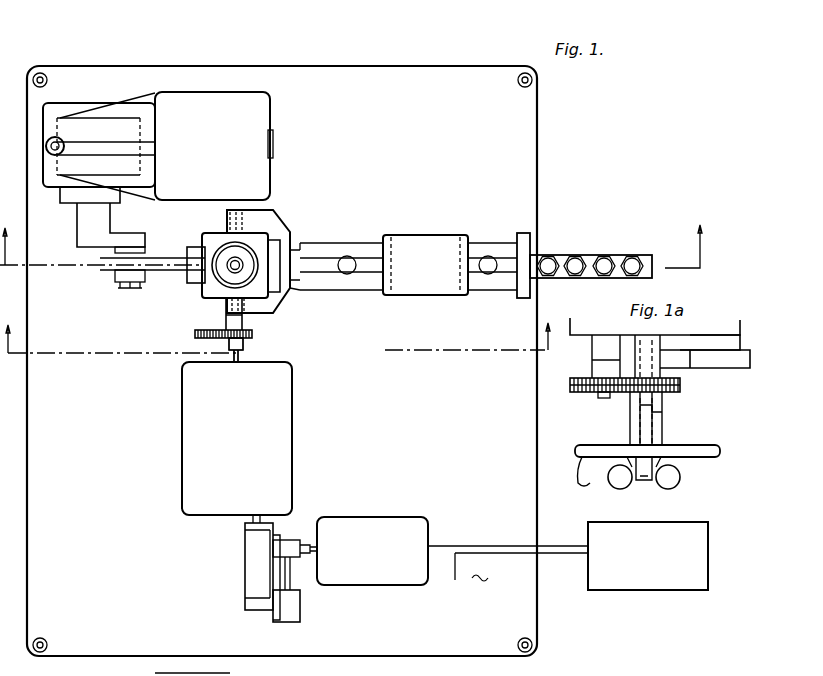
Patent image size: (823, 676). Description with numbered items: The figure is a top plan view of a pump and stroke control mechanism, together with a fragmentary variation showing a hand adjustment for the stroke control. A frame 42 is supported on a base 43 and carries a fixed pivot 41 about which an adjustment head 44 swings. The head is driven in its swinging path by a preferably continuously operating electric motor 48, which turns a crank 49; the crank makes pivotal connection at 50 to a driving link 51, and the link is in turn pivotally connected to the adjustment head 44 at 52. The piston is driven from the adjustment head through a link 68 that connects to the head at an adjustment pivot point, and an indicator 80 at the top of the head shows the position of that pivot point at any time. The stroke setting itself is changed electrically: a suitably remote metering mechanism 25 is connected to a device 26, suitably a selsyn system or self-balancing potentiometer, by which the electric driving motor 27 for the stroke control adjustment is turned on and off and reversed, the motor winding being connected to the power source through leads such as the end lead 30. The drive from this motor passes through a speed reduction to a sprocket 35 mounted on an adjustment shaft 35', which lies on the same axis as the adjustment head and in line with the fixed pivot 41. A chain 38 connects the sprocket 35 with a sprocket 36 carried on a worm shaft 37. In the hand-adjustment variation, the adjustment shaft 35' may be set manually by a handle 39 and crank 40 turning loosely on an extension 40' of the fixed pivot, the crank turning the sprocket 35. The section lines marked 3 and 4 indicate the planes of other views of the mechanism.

In FIG. 1, the section line 3 is at (281, 343).
In FIG. 1, the section line 4 is at (358, 251).
In FIG. 1, the metering mechanism 25 is at (648, 556).
In FIG. 1, the device 26 is at (366, 532).
In FIG. 1, the electric driving motor 27 is at (294, 430).
In FIG. 1, the end lead 30 is at (236, 595).
In FIG. 1, the sprocket 35 is at (440, 297).
In FIG. 1A, the sprocket 35 is at (679, 417).
In FIG. 1, the adjustment shaft 35' is at (292, 363).
In FIG. 1A, the adjustment shaft 35' is at (626, 421).
In FIG. 1, the sprocket 36 is at (195, 335).
In FIG. 1A, the sprocket 36 is at (575, 392).
In FIG. 1, the worm shaft 37 is at (222, 346).
In FIG. 1A, the worm shaft 37 is at (604, 400).
In FIG. 1, the chain 38 is at (245, 331).
In FIG. 1A, the handle 39 is at (590, 482).
In FIG. 1A, the crank 40 is at (654, 440).
In FIG. 1A, the extension 40' is at (676, 417).
In FIG. 1, the fixed pivot 41 is at (262, 214).
In FIG. 1, the frame 42 is at (283, 226).
In FIG. 1A, the frame 42 is at (706, 352).
In FIG. 1, the base 43 is at (112, 460).
In FIG. 1, the adjustment head 44 is at (206, 234).
In FIG. 1A, the adjustment head 44 is at (708, 333).
In FIG. 1, the electric motor 48 is at (88, 118).
In FIG. 1, the crank 49 is at (135, 240).
In FIG. 1, the pivotal connection 50 is at (134, 288).
In FIG. 1, the driving link 51 is at (162, 258).
In FIG. 1, the pivotal connection 52 is at (196, 283).
In FIG. 1, the link 68 is at (296, 262).
In FIG. 1, the indicator 80 is at (232, 268).